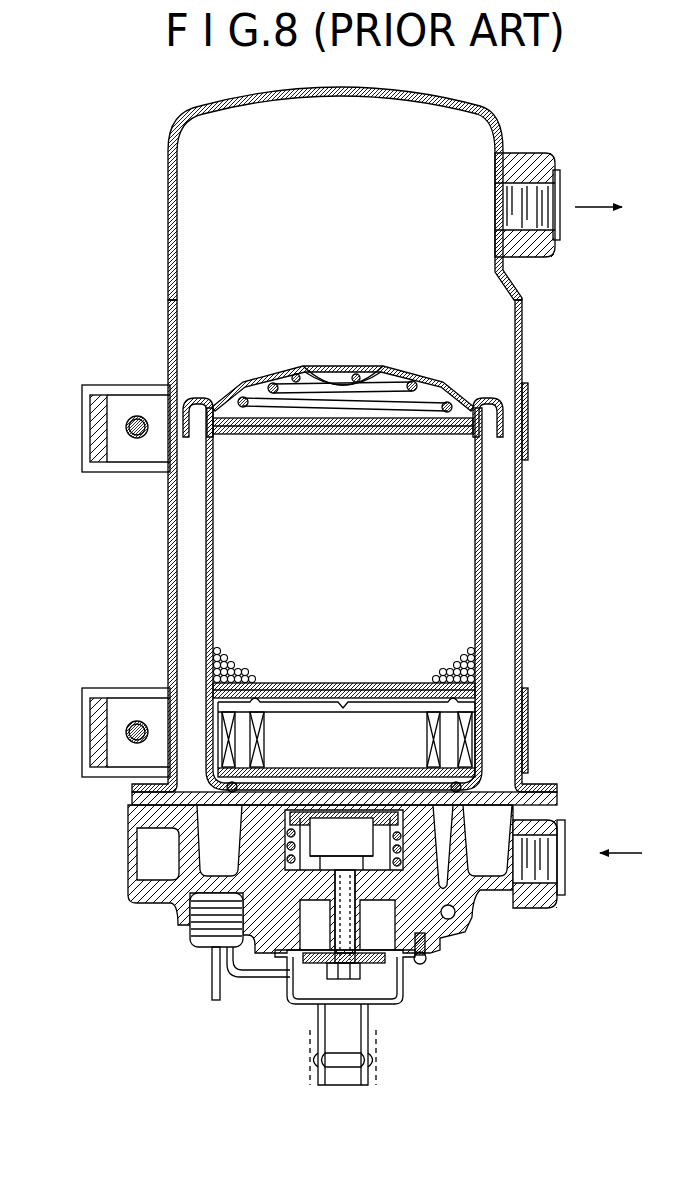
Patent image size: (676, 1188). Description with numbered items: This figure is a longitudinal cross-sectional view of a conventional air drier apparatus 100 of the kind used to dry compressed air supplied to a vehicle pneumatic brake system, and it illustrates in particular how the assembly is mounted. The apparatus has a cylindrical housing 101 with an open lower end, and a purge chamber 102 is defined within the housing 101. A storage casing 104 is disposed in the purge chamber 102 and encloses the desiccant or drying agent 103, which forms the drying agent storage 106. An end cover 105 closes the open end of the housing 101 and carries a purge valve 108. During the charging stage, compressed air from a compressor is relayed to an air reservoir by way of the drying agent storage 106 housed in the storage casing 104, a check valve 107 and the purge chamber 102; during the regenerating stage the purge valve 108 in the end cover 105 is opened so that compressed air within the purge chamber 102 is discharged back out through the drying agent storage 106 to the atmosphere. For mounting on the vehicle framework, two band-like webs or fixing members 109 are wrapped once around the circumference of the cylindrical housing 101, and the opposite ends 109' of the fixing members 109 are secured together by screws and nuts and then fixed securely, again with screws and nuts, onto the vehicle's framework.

The air drier apparatus 100 is at (471, 98).
The housing 101 is at (522, 352).
The purge chamber 102 is at (483, 303).
The desiccant or drying agent 103 is at (483, 660).
The storage casing 104 is at (485, 545).
The end cover 105 is at (457, 898).
The drying agent storage 106 is at (463, 508).
The check valve 107 is at (343, 384).
The purge valve 108 is at (323, 963).
The fixing member 109 is at (553, 578).
The opposite ends of fixing member 109' is at (99, 557).